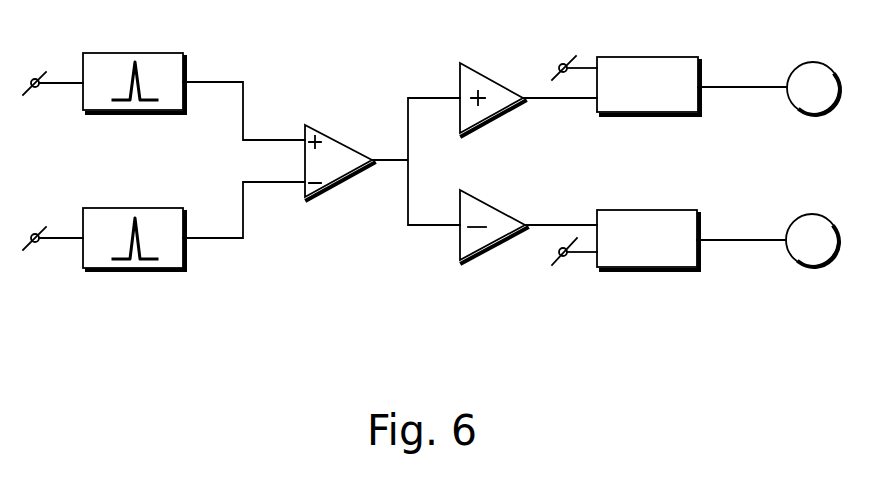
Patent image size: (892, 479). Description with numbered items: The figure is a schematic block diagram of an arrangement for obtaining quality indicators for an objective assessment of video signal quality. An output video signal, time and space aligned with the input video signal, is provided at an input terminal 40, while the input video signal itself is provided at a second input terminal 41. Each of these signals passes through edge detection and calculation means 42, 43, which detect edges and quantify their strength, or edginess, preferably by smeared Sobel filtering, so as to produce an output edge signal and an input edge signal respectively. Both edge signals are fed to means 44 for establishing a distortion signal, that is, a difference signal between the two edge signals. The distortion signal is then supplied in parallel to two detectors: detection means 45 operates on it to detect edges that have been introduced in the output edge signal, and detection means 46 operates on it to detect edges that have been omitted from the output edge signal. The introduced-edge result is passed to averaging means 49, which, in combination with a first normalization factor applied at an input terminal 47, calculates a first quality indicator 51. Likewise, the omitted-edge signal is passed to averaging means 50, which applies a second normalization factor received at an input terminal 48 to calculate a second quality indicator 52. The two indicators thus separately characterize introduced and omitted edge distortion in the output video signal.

The input terminal 40 is at (42, 76).
The input terminal 41 is at (42, 231).
The edge detection and calculation means 42 is at (157, 62).
The edge detection and calculation means 43 is at (157, 218).
The means for establishing a distortion signal 44 is at (333, 145).
The detection means 45 is at (472, 75).
The detection means 46 is at (470, 202).
The input terminal 47 is at (568, 63).
The input terminal 48 is at (565, 258).
The averaging means 49 is at (655, 63).
The averaging means 50 is at (657, 220).
The first quality indicator 51 is at (808, 68).
The second quality indicator 52 is at (807, 223).